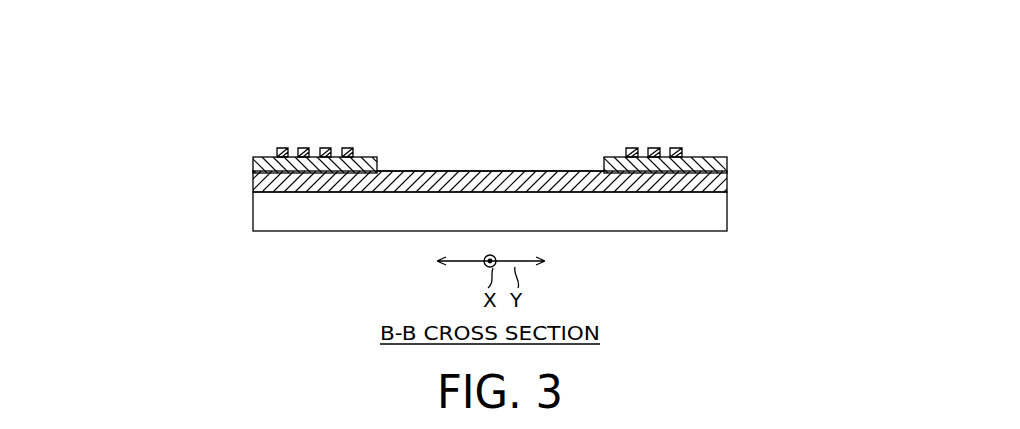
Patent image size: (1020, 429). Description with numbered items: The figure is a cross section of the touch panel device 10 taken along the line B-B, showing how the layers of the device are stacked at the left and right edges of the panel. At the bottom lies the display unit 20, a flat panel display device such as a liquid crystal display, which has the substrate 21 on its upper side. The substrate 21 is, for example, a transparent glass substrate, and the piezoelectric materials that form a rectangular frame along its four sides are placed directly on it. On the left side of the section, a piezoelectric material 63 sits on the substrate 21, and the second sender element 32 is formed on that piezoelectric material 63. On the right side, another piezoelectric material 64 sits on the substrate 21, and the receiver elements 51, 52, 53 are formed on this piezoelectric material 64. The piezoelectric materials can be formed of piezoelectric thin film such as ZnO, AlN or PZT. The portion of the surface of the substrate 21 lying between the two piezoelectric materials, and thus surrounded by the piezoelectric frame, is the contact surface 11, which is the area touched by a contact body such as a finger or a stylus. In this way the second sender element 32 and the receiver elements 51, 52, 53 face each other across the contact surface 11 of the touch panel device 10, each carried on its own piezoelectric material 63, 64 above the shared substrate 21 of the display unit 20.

The touch panel device 10 is at (663, 32).
The contact surface 11 is at (490, 171).
The display unit 20 is at (733, 175).
The substrate 21 is at (253, 188).
The second sender element 32 is at (317, 108).
The receiver element 51 is at (655, 110).
The receiver element 52 is at (654, 152).
The receiver element 53 is at (676, 152).
The piezoelectric material 63 is at (253, 163).
The piezoelectric material 64 is at (727, 164).